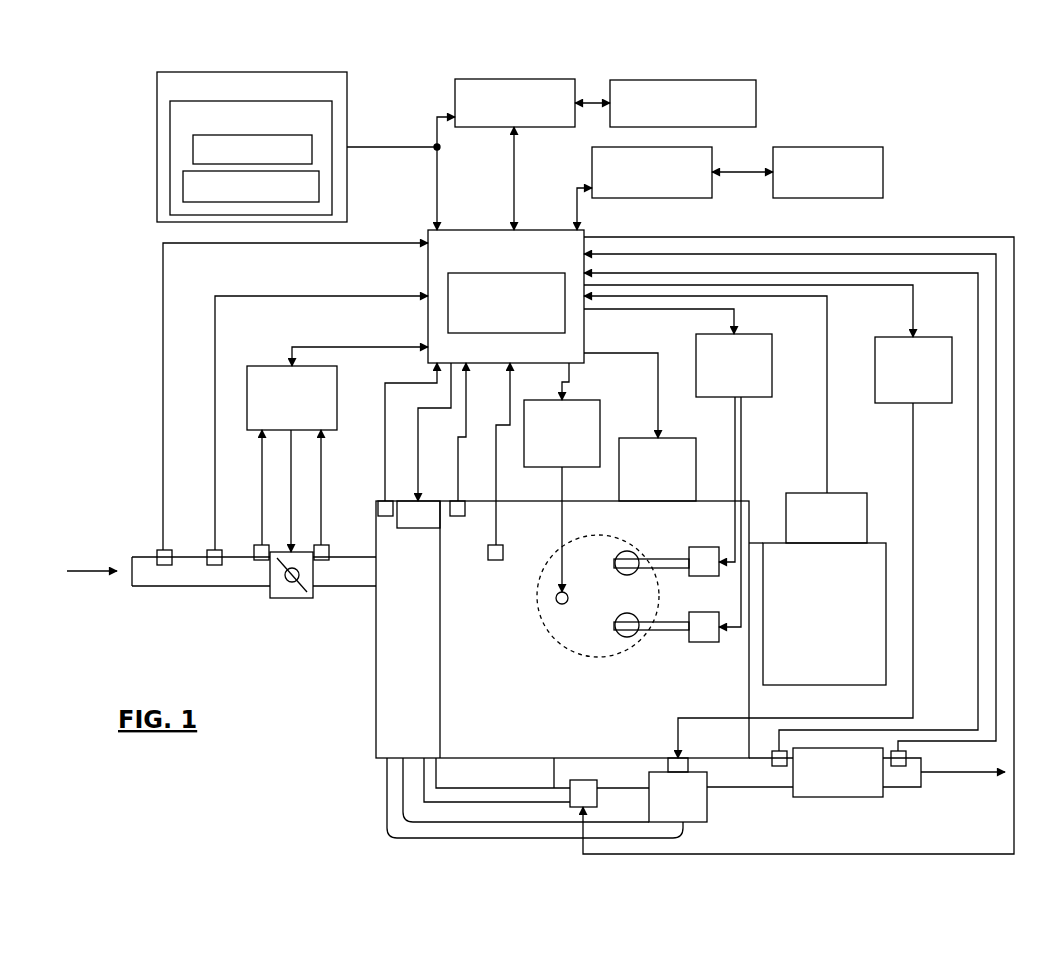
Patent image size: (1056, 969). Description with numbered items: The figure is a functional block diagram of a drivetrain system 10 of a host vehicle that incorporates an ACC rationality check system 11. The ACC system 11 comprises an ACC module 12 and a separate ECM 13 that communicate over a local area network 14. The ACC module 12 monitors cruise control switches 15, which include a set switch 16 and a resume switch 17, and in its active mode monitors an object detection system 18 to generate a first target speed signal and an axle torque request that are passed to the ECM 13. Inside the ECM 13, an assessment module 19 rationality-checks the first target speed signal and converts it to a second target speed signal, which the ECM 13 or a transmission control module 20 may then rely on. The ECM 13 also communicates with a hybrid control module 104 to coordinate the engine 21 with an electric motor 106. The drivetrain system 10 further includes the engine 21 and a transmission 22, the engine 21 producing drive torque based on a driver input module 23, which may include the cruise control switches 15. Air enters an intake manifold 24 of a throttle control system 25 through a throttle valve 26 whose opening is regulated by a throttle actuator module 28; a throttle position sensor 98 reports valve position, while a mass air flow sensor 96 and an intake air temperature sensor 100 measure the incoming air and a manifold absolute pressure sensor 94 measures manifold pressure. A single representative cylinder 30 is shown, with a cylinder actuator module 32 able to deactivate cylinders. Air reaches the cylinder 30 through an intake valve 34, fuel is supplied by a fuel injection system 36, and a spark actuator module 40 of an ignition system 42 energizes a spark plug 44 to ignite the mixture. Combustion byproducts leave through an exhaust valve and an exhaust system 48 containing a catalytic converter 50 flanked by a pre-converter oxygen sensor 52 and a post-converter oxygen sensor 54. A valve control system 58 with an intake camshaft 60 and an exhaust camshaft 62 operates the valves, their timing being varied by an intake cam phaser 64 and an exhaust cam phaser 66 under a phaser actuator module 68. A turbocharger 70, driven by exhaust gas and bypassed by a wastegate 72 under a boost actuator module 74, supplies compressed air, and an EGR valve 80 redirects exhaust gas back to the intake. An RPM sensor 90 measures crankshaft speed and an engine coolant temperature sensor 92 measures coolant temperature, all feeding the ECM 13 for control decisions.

The drivetrain system 10 is at (993, 152).
The ACC rationality check system 11 is at (69, 170).
The ACC module 12 is at (455, 103).
The ECM 13 is at (428, 232).
The local area network 14 is at (514, 183).
The cruise control switches 15 is at (170, 130).
The set switch 16 is at (193, 149).
The resume switch 17 is at (183, 186).
The object detection system 18 is at (756, 101).
The assessment module 19 is at (448, 288).
The transmission control module 20 is at (800, 493).
The engine 21 is at (530, 501).
The transmission 22 is at (874, 543).
The driver input module 23 is at (157, 99).
The intake manifold 24 is at (376, 700).
The throttle control system 25 is at (155, 362).
The throttle valve 26 is at (290, 598).
The throttle actuator module 28 is at (268, 366).
The cylinder 30 is at (562, 645).
The cylinder actuator module 32 is at (638, 438).
The intake valve 34 is at (627, 551).
The fuel injection system 36 is at (420, 528).
The spark actuator module 40 is at (582, 400).
The ignition system 42 is at (707, 230).
The spark plug 44 is at (556, 598).
The exhaust system 48 is at (624, 637).
The catalytic converter 50 is at (835, 797).
The pre-converter O2 sensor 52 is at (779, 766).
The post-converter O2 sensor 54 is at (898, 766).
The valve control system 58 is at (920, 490).
The intake camshaft 60 is at (665, 559).
The exhaust camshaft 62 is at (670, 630).
The intake cam phaser 64 is at (703, 547).
The exhaust cam phaser 66 is at (705, 642).
The phaser actuator module 68 is at (772, 346).
The turbocharger 70 is at (707, 805).
The wastegate 72 is at (668, 762).
The boost actuator module 74 is at (930, 403).
The EGR valve 80 is at (585, 780).
The RPM sensor 90 is at (493, 560).
The engine coolant temperature sensor 92 is at (460, 516).
The manifold absolute pressure sensor 94 is at (380, 503).
The mass air flow sensor 96 is at (212, 565).
The throttle position sensors 98 is at (261, 560).
The intake air temperature sensor 100 is at (160, 550).
The hybrid control module 104 is at (652, 198).
The electric motor 106 is at (883, 182).